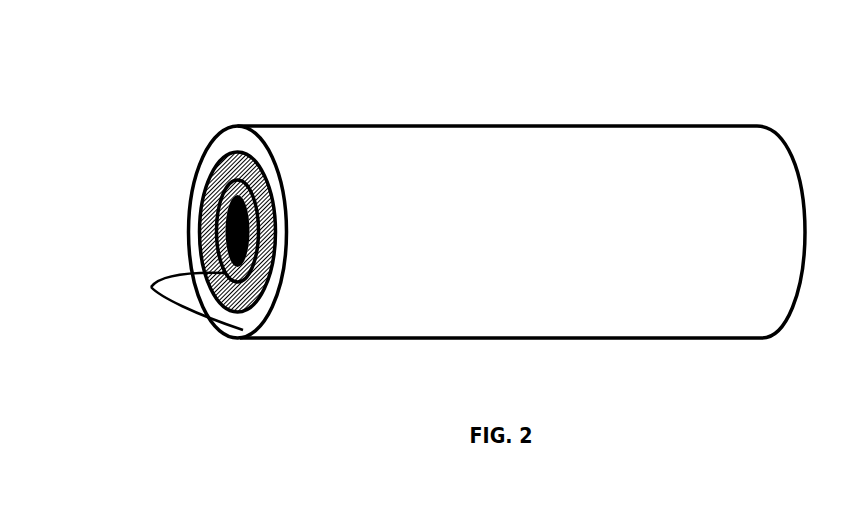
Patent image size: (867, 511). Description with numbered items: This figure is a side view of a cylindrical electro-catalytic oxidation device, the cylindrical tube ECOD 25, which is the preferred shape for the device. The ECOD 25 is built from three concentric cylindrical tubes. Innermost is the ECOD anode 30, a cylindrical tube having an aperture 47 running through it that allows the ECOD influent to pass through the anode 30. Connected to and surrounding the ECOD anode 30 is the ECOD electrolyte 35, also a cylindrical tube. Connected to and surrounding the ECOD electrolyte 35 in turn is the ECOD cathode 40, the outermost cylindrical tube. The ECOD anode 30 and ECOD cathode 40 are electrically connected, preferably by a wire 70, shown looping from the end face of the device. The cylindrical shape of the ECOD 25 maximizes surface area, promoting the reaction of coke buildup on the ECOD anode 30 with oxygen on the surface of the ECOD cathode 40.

The cylindrical tube ECOD 25 is at (477, 46).
The ECOD anode 30 is at (212, 175).
The ECOD electrolyte 35 is at (240, 164).
The ECOD cathode 40 is at (603, 170).
The aperture 47 is at (217, 210).
The wire 70 is at (151, 284).